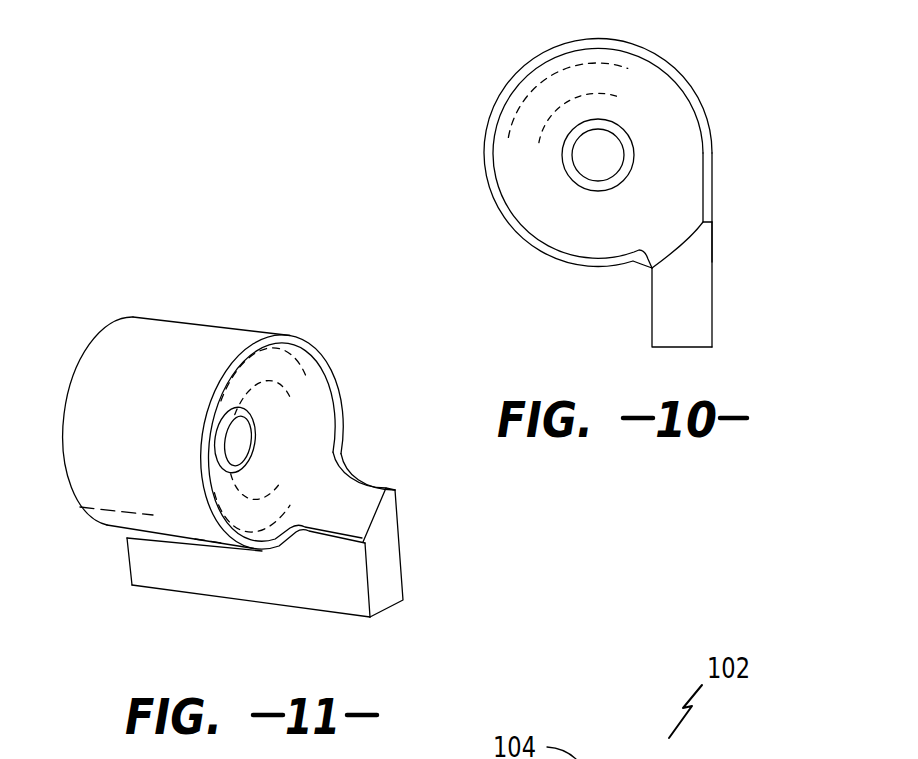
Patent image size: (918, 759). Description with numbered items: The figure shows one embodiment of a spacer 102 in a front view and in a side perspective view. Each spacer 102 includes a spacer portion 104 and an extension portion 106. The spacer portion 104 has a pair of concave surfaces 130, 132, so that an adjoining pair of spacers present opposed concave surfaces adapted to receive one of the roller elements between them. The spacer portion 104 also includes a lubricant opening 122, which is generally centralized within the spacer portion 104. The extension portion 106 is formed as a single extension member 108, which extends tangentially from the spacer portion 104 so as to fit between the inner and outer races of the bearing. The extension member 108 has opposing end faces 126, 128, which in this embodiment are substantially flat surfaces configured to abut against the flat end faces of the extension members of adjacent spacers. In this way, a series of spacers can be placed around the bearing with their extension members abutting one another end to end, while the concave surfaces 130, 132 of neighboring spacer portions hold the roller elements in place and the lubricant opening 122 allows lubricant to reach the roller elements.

In FIG. 10, the spacer 102 is at (585, 179).
In FIG. 11, the spacer 102 is at (260, 436).
In FIG. 10, the spacer portion 104 is at (652, 47).
In FIG. 11, the spacer portion 104 is at (180, 340).
In FIG. 10, the extension portion 106 is at (716, 291).
In FIG. 11, the extension portion 106 is at (408, 580).
In FIG. 10, the extension member 108 is at (713, 331).
In FIG. 11, the extension member 108 is at (283, 577).
In FIG. 10, the lubricant opening 122 is at (592, 155).
In FIG. 11, the lubricant opening 122 is at (228, 432).
In FIG. 10, the end face 126 is at (694, 261).
In FIG. 11, the end face 126 is at (382, 548).
In FIG. 11, the end face 128 is at (127, 558).
In FIG. 10, the concave surface 130 is at (523, 175).
In FIG. 11, the concave surface 130 is at (300, 427).
In FIG. 11, the concave surface 132 is at (72, 375).